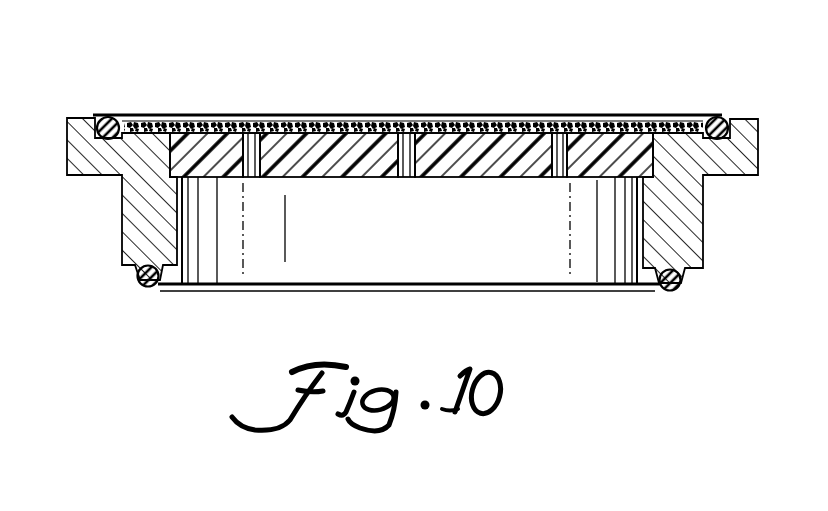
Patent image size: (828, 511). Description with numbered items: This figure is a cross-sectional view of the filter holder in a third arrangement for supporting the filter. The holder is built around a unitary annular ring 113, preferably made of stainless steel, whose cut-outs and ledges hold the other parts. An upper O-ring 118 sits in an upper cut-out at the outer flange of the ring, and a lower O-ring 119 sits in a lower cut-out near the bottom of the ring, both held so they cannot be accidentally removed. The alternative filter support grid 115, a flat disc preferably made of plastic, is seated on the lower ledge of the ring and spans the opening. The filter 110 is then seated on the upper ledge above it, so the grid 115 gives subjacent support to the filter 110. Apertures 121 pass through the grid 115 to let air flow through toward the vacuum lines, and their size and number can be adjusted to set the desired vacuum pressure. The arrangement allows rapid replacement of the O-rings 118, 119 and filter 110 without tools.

The filter 110 is at (337, 115).
The unitary annular ring 113 is at (125, 216).
The filter support grid 115 is at (382, 179).
The O-ring 118 is at (108, 117).
The O-ring 119 is at (145, 288).
The apertures 121 is at (553, 180).